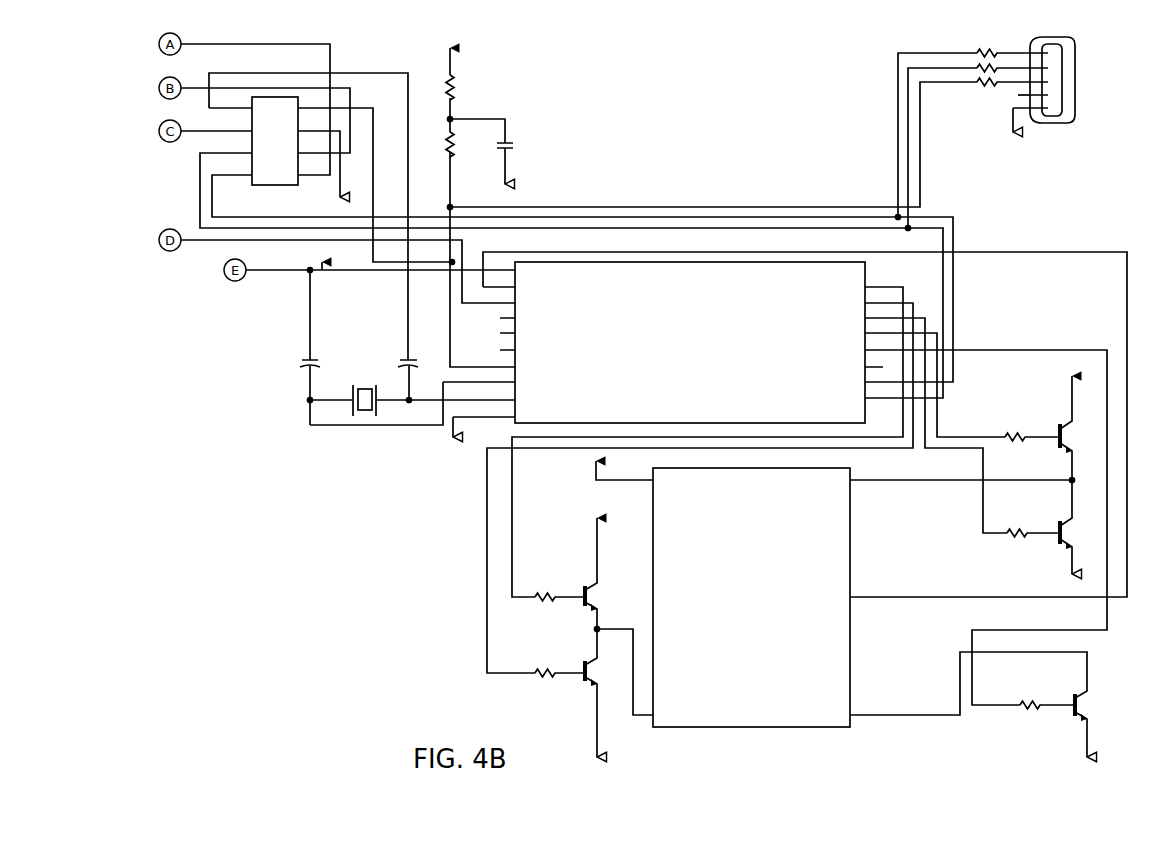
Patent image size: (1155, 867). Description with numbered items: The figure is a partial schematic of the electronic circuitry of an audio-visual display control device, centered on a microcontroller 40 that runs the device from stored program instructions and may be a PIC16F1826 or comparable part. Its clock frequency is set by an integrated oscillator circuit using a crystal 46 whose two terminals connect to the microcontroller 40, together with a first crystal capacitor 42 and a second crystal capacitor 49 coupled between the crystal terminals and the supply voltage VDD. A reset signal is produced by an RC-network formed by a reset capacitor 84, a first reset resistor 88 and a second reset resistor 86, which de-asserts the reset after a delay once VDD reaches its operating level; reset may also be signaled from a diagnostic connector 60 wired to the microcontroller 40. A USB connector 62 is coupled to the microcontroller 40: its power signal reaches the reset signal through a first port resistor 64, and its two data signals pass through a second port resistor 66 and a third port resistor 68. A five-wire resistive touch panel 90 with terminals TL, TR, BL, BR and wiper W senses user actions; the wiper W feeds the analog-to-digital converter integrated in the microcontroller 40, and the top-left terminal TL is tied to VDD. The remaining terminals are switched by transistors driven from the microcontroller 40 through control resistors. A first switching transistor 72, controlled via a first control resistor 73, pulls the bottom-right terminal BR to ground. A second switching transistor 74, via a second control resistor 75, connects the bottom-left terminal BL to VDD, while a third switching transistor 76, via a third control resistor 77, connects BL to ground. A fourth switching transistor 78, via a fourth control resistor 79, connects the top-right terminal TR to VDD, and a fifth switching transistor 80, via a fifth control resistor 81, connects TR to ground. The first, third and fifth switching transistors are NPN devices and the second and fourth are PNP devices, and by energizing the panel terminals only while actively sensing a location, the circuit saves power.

The microcontroller 40 is at (701, 262).
The first crystal capacitor 42 is at (307, 365).
The crystal 46 is at (365, 411).
The second crystal capacitor 49 is at (404, 360).
The diagnostic connector 60 is at (275, 186).
The USB connector 62 is at (1052, 123).
The first port resistor 64 is at (986, 50).
The second port resistor 66 is at (972, 54).
The third port resistor 68 is at (985, 88).
The first switching transistor 72 is at (1068, 718).
The first control resistor 73 is at (1021, 710).
The second switching transistor 74 is at (590, 606).
The second control resistor 75 is at (540, 604).
The third switching transistor 76 is at (590, 682).
The third control resistor 77 is at (540, 680).
The fourth switching transistor 78 is at (1058, 428).
The fourth control resistor 79 is at (1006, 435).
The fifth switching transistor 80 is at (1057, 545).
The fifth control resistor 81 is at (1010, 540).
The reset capacitor 84 is at (514, 145).
The second reset resistor 86 is at (454, 142).
The first reset resistor 88 is at (455, 93).
The touch panel 90 is at (745, 727).